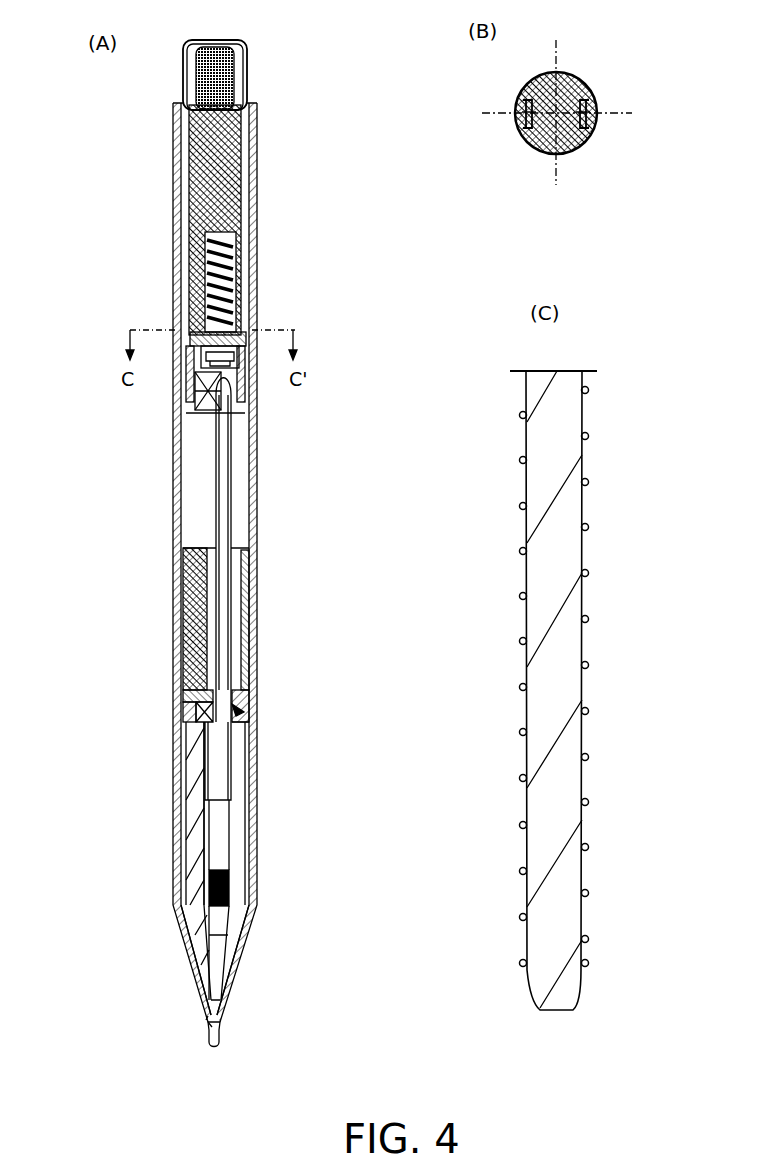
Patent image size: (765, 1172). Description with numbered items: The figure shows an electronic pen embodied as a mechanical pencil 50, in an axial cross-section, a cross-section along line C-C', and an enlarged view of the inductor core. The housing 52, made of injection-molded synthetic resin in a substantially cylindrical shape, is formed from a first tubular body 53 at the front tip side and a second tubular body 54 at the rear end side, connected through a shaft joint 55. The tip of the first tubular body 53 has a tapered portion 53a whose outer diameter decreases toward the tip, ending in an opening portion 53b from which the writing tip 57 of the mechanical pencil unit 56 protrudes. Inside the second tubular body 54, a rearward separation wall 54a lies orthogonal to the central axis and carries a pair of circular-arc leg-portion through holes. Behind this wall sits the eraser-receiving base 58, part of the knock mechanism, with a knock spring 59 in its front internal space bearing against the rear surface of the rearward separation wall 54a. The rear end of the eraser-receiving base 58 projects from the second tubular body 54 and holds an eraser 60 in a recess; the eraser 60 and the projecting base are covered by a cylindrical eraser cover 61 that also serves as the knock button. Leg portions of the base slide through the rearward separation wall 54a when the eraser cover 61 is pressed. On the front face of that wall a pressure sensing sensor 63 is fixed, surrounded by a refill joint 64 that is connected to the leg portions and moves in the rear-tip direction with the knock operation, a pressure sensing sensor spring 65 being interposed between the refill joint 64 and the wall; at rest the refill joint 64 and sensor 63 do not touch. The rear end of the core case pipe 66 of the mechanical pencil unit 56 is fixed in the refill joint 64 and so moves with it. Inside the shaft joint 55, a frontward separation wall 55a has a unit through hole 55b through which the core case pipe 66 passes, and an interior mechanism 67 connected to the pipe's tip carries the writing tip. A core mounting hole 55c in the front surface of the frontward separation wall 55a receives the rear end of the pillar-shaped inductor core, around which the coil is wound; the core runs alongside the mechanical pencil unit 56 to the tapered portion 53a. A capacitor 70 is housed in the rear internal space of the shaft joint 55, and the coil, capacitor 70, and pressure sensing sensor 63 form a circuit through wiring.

The mechanical pencil 50 is at (326, 90).
The eraser cover 61 is at (246, 44).
The eraser 60 is at (238, 68).
The eraser-receiving base 58 is at (240, 160).
The knock spring 59 is at (230, 302).
The pressure sensing sensor spring 65 is at (244, 352).
The refill joint 64 is at (205, 392).
The pressure sensing sensor 63 is at (222, 400).
The capacitor 70 is at (195, 548).
The housing 52 is at (96, 552).
The second tubular body 54 is at (185, 585).
The shaft joint 55 is at (185, 668).
The first tubular body 53 is at (187, 752).
The frontward separation wall 55a is at (244, 704).
The unit through hole 55b is at (236, 727).
The core mounting hole 55c is at (225, 748).
The mechanical pencil unit 56 is at (322, 812).
The core case pipe 66 is at (222, 782).
The interior mechanism 67 is at (218, 842).
The tapered portion 53a is at (246, 940).
The opening portion 53b is at (206, 1022).
The writing tip 57 is at (222, 1040).
The rearward separation wall 54a is at (536, 150).